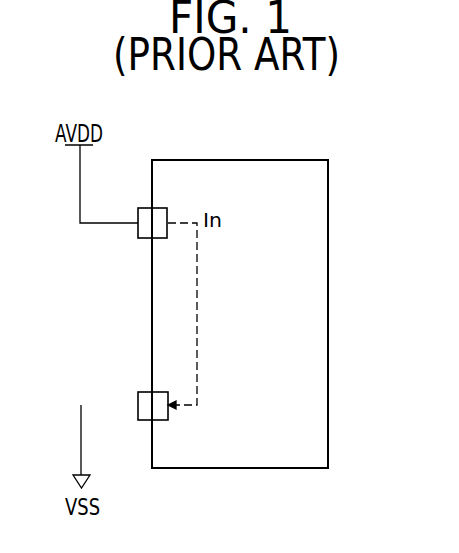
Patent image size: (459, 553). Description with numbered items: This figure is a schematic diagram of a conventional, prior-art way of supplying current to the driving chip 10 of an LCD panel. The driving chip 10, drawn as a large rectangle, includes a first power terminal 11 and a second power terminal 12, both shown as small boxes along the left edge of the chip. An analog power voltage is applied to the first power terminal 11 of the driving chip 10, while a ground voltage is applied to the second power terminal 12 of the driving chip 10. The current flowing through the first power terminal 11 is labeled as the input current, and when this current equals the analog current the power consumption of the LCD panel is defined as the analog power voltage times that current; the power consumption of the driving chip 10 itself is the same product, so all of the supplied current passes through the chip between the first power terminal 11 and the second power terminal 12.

The driving chip 10 is at (300, 160).
The first power terminal 11 is at (143, 238).
The second power terminal 12 is at (143, 420).